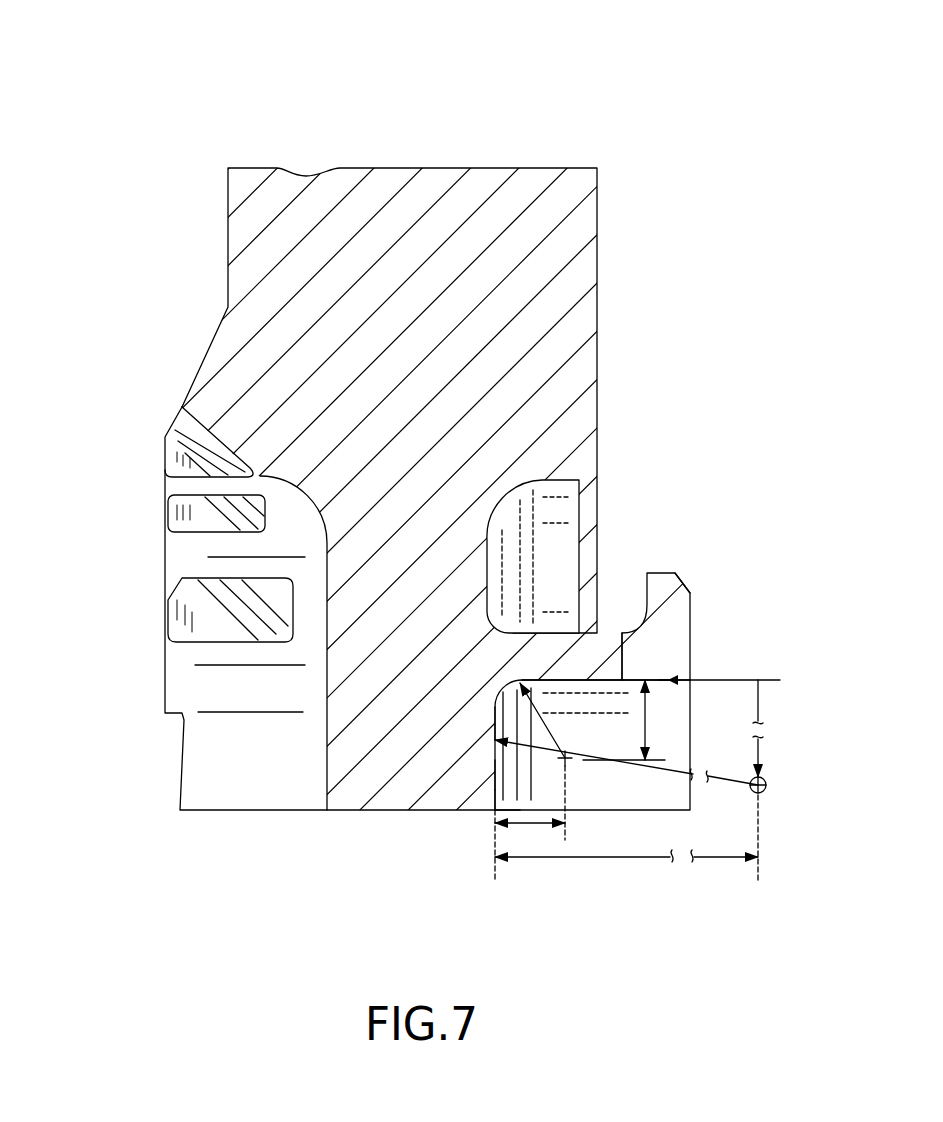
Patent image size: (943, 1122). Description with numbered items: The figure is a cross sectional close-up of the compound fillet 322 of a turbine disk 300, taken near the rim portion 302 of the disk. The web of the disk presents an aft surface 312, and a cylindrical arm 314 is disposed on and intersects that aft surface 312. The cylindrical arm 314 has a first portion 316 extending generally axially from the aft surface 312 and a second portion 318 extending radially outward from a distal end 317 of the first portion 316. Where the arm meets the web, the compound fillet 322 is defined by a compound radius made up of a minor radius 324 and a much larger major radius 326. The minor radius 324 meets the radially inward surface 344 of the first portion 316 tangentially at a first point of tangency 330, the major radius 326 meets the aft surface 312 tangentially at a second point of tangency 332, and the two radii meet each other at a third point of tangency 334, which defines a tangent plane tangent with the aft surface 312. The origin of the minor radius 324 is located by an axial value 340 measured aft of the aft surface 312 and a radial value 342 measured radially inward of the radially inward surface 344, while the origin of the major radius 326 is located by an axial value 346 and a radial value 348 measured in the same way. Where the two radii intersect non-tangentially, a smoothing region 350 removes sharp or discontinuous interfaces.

The turbine disk 300 is at (153, 175).
The rim portion 302 is at (105, 378).
The aft surface 312 is at (492, 800).
The cylindrical arm 314 is at (740, 628).
The first portion 316 is at (658, 681).
The distal end 317 is at (690, 684).
The second portion 318 is at (690, 606).
The compound fillet 322 is at (612, 772).
The minor radius 324 is at (552, 733).
The major radius 326 is at (575, 758).
The first point of tangency 330 is at (573, 680).
The second point of tangency 332 is at (492, 763).
The third point of tangency 334 is at (490, 730).
The axial value 340 is at (532, 823).
The radial value 342 is at (645, 730).
The radially inward surface 344 is at (622, 633).
The axial value 346 is at (642, 860).
The radial value 348 is at (758, 697).
The smoothing region 350 is at (448, 757).